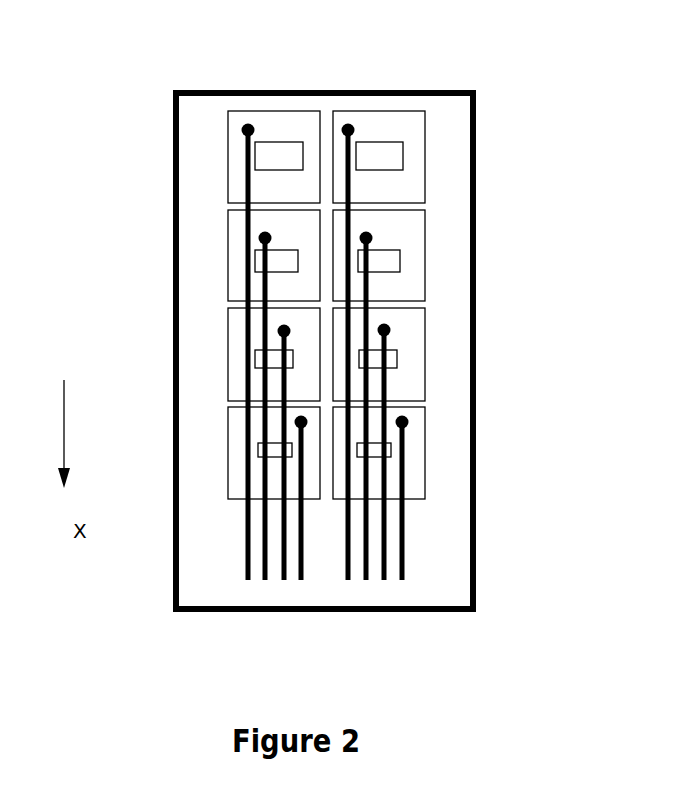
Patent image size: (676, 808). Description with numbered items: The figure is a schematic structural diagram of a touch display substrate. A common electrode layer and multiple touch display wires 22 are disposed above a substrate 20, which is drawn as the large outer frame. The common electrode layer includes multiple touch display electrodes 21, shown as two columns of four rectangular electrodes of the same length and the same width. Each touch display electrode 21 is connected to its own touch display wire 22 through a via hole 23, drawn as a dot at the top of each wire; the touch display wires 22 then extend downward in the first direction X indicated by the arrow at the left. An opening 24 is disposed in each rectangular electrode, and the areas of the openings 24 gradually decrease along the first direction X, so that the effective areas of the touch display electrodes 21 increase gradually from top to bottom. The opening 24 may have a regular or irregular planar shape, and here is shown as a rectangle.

The substrate 20 is at (474, 397).
The touch display electrode 21 is at (422, 168).
The touch display wire 22 is at (246, 258).
The via hole 23 is at (248, 130).
The opening 24 is at (398, 260).